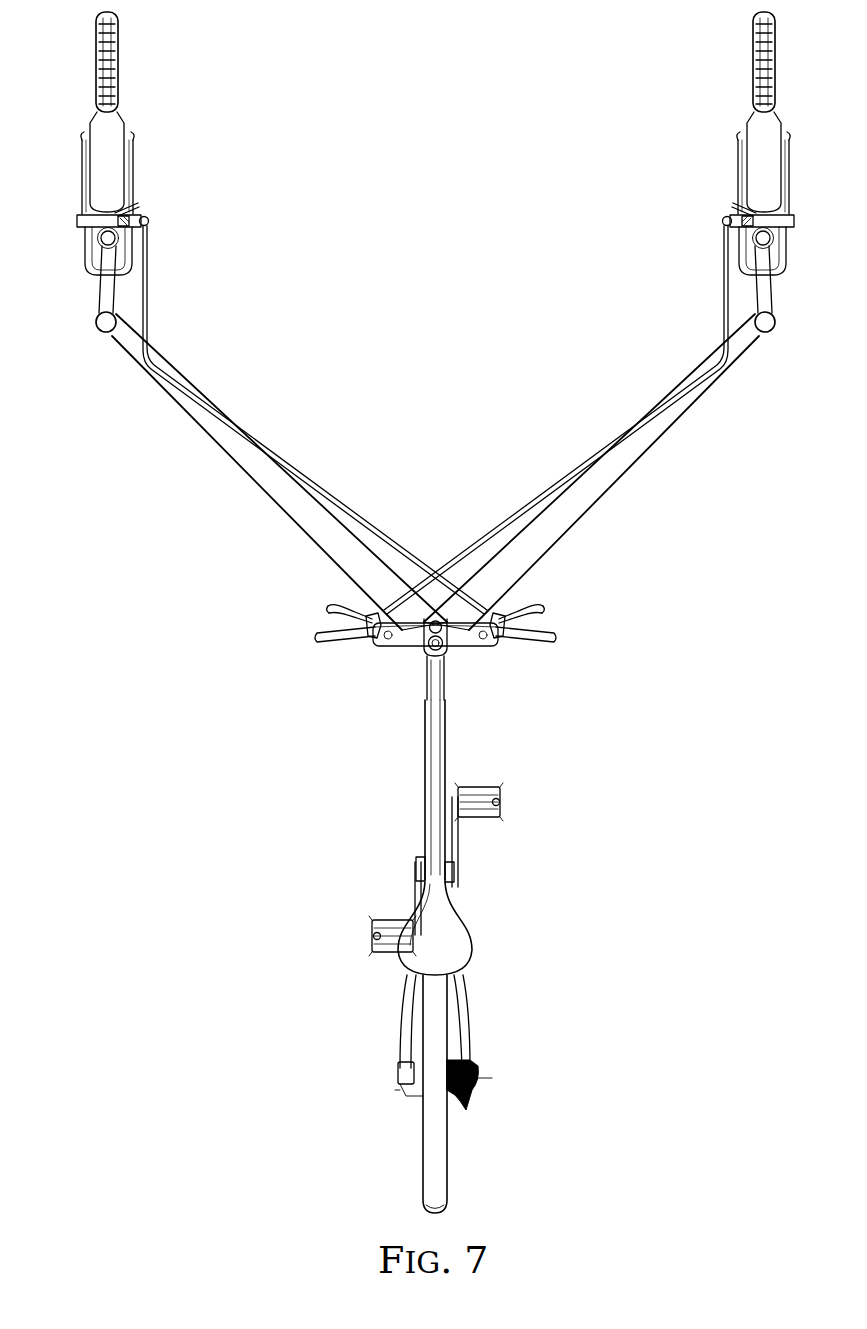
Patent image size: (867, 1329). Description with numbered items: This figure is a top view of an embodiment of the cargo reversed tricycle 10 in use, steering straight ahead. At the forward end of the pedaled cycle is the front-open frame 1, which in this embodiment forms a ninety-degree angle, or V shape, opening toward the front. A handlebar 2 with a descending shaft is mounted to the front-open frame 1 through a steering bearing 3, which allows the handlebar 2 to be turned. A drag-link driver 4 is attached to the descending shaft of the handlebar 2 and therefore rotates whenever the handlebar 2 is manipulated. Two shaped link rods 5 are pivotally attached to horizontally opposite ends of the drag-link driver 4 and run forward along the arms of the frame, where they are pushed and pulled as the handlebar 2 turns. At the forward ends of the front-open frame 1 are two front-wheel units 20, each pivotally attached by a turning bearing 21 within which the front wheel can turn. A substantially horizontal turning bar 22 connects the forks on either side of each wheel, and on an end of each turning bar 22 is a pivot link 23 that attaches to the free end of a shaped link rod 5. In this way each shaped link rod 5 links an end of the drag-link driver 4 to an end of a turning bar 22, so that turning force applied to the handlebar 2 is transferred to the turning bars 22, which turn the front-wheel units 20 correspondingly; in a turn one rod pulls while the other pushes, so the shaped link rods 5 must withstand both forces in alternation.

The front-open frame 1 is at (315, 533).
The handlebar 2 is at (493, 645).
The steering bearing 3 is at (447, 650).
The drag-link driver 4 is at (397, 639).
The shaped link rod 5 is at (331, 507).
The cargo reversed tricycle 10 is at (712, 1088).
The front-wheel unit 20 is at (66, 322).
The turning bearing 21 is at (136, 212).
The turning bar 22 is at (130, 217).
The pivot link 23 is at (150, 223).